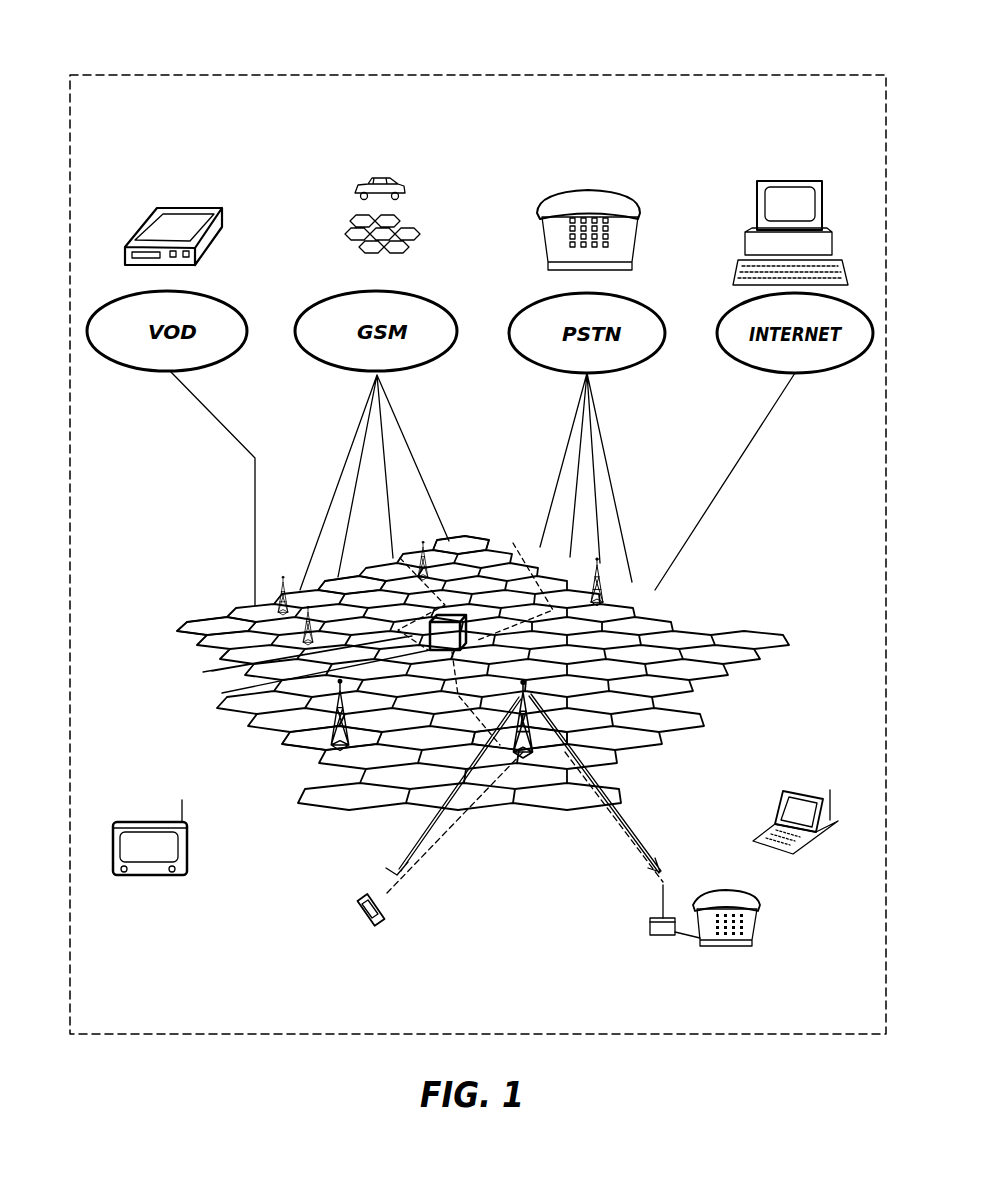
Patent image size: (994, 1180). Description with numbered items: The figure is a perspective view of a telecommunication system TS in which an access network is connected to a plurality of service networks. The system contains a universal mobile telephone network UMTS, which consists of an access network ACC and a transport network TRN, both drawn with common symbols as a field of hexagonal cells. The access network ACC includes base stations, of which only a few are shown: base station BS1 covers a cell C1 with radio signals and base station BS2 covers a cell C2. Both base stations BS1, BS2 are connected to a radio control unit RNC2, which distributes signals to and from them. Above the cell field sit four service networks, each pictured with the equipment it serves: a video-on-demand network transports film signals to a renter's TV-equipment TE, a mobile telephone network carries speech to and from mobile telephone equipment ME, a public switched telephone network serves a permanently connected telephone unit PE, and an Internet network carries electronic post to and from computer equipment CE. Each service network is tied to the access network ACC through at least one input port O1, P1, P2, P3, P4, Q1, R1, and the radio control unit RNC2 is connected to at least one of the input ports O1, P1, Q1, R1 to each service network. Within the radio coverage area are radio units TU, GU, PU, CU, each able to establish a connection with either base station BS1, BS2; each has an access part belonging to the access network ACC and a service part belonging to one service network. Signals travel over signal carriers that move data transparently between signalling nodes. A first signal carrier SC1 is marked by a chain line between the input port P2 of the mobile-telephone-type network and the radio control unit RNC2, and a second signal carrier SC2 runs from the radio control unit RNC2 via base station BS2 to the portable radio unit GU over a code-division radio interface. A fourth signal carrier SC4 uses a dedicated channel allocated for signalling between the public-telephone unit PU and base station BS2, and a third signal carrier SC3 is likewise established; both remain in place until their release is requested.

The telecommunication system TS is at (700, 67).
The TV-equipment TE is at (179, 213).
The mobile telephone equipment ME is at (384, 180).
The permanently connected telephone unit PE is at (587, 188).
The computer equipment CE is at (792, 180).
The universal mobile telephone network UMTS is at (433, 641).
The access network ACC is at (463, 641).
The transport network TRN is at (483, 641).
The input port O1 is at (255, 601).
The input port P1 is at (458, 545).
The input port P2 is at (402, 553).
The input port P3 is at (342, 580).
The input port P4 is at (297, 587).
The first signal carrier SC1 is at (291, 660).
The radio control unit RNC2 is at (317, 662).
The third signal carrier SC3 is at (505, 536).
The input port Q1 is at (516, 538).
The input port R1 is at (660, 592).
The base station BS1 is at (328, 739).
The cell C1 is at (322, 754).
The base station BS2 is at (535, 716).
The cell C2 is at (558, 748).
The second signal carrier SC2 is at (427, 853).
The fourth signal carrier SC4 is at (607, 835).
The radio unit TU is at (150, 878).
The portable radio unit GU is at (367, 927).
The PSTN-unit PU is at (725, 948).
The radio unit CU is at (807, 848).